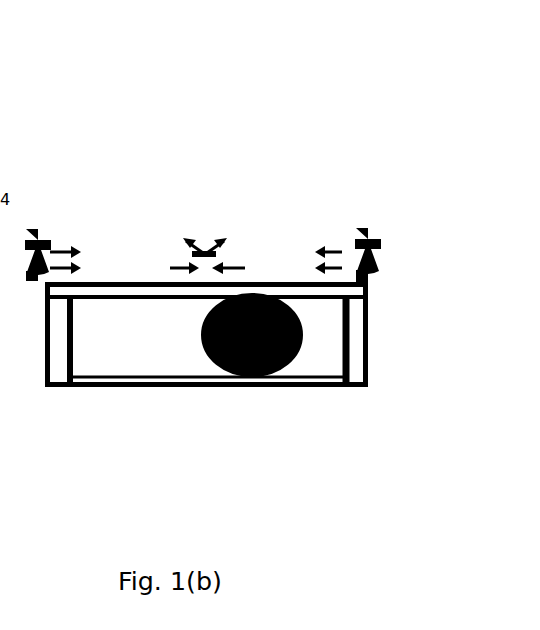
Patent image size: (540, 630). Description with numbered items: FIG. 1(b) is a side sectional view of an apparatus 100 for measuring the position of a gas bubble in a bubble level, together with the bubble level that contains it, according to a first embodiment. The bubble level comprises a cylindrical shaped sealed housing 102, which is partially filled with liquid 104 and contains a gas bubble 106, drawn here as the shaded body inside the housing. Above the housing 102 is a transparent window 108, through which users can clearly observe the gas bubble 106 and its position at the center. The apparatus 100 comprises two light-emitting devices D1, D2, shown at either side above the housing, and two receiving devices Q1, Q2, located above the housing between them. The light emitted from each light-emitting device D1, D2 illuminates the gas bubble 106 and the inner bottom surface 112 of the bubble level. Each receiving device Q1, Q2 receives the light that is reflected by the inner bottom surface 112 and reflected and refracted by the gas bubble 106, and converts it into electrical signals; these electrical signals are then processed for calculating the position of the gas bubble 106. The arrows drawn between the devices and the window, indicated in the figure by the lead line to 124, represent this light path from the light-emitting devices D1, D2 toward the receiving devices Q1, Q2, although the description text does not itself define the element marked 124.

The apparatus 100 is at (338, 36).
The cylindrical shaped sealed housing 102 is at (350, 362).
The liquid 104 is at (120, 368).
The gas bubble 106 is at (252, 350).
The transparent window 108 is at (95, 291).
The inner bottom surface 112 is at (313, 380).
The light output 124 is at (223, 193).
The receiving device Q1 is at (190, 221).
The receiving device Q2 is at (221, 221).
The light-emitting device D1 is at (359, 259).
The light-emitting device D2 is at (46, 267).